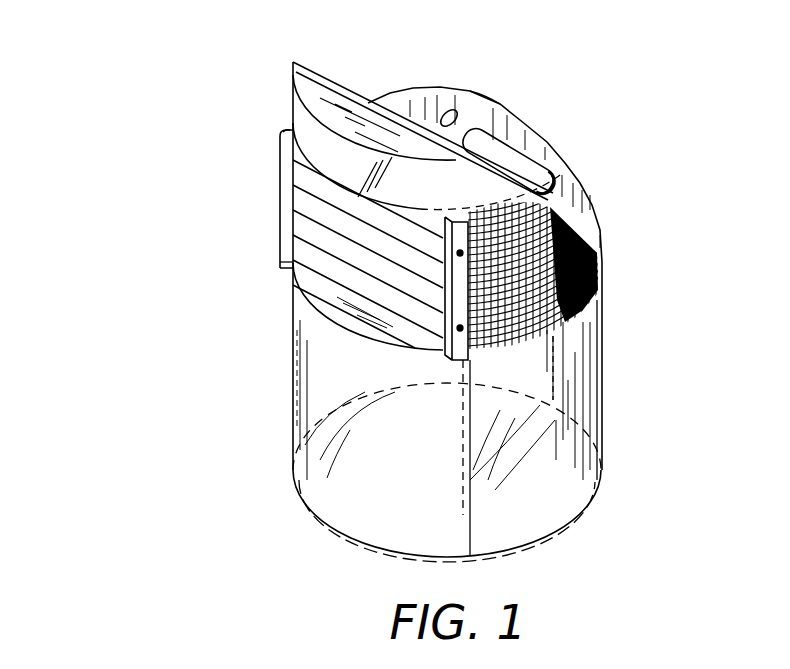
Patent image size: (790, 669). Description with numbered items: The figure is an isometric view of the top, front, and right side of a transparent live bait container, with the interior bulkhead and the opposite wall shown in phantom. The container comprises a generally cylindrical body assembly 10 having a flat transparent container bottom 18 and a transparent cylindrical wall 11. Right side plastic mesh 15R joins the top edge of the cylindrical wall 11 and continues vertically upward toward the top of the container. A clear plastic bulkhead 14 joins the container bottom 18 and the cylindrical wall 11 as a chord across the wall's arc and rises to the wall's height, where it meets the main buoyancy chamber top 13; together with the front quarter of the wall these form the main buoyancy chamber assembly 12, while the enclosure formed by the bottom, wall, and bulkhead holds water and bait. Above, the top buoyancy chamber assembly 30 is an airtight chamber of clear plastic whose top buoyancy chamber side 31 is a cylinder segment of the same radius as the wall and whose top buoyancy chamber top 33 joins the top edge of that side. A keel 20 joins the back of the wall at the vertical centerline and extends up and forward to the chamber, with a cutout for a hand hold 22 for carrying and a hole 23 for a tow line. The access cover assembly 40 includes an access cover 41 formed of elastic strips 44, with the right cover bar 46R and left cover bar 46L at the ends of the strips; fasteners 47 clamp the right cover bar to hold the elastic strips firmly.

The cylindrical body assembly 10 is at (585, 509).
The cylindrical wall 11 is at (333, 537).
The main buoyancy chamber assembly 12 is at (388, 517).
The main buoyancy chamber top 13 is at (340, 325).
The bulkhead 14 is at (480, 533).
The right side plastic mesh 15R is at (574, 237).
The container bottom 18 is at (293, 490).
The keel 20 is at (548, 137).
The cutout for hand hold 22 is at (548, 190).
The hole for a tow line 23 is at (497, 105).
The top buoyancy chamber assembly 30 is at (412, 110).
The top buoyancy chamber side 31 is at (290, 127).
The top buoyancy chamber top 33 is at (327, 80).
The access cover assembly 40 is at (350, 268).
The access cover 41 is at (287, 267).
The elastic strips 44 is at (292, 258).
The left cover bar 46L is at (280, 143).
The right cover bar 46R is at (470, 370).
The fastener 47 is at (465, 330).